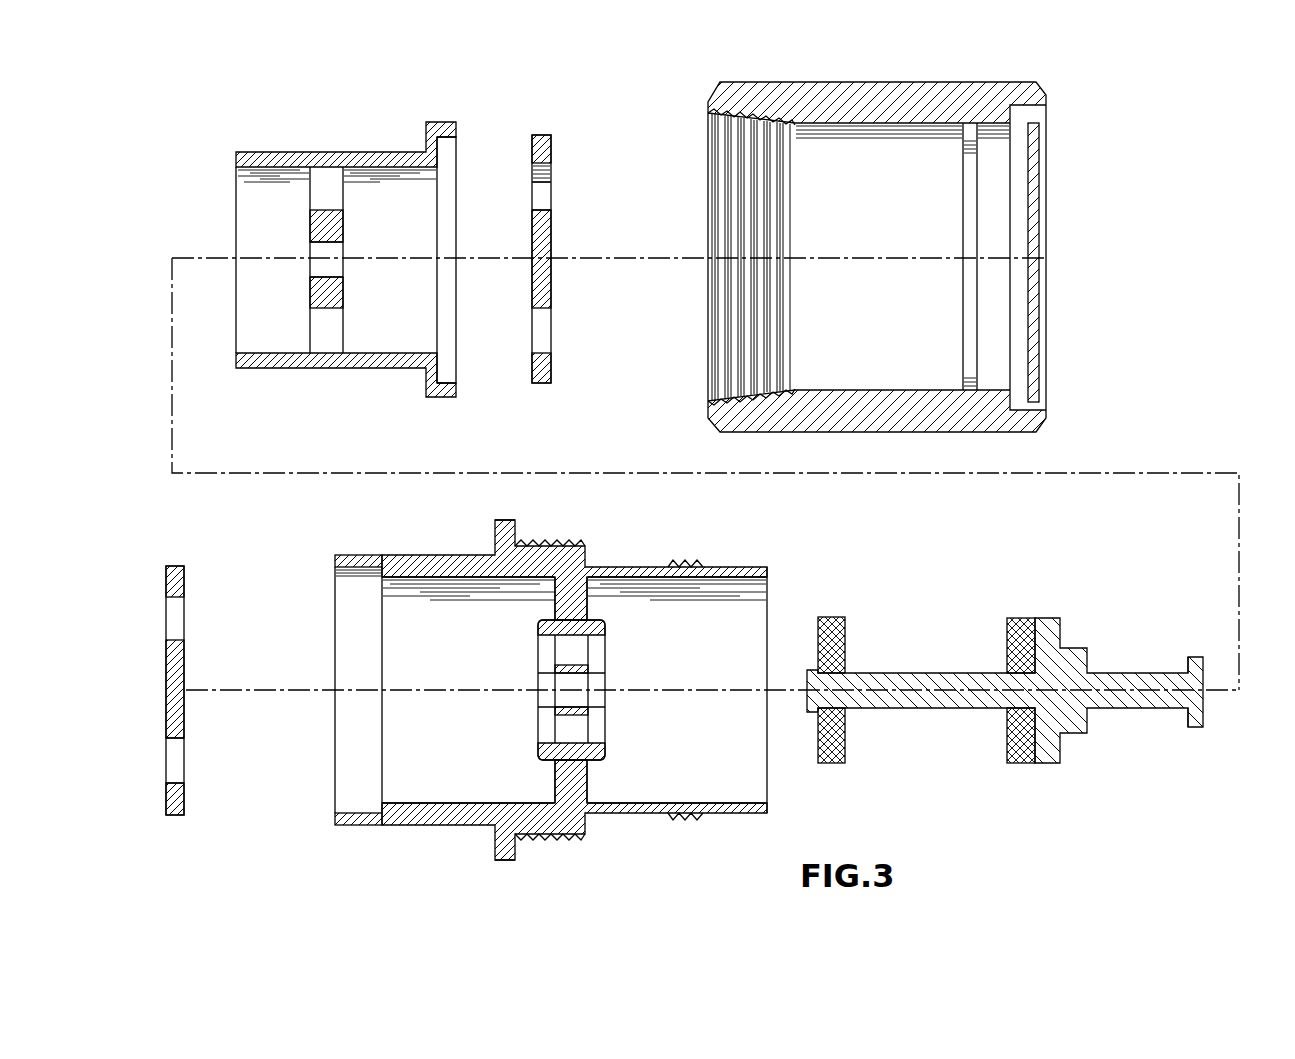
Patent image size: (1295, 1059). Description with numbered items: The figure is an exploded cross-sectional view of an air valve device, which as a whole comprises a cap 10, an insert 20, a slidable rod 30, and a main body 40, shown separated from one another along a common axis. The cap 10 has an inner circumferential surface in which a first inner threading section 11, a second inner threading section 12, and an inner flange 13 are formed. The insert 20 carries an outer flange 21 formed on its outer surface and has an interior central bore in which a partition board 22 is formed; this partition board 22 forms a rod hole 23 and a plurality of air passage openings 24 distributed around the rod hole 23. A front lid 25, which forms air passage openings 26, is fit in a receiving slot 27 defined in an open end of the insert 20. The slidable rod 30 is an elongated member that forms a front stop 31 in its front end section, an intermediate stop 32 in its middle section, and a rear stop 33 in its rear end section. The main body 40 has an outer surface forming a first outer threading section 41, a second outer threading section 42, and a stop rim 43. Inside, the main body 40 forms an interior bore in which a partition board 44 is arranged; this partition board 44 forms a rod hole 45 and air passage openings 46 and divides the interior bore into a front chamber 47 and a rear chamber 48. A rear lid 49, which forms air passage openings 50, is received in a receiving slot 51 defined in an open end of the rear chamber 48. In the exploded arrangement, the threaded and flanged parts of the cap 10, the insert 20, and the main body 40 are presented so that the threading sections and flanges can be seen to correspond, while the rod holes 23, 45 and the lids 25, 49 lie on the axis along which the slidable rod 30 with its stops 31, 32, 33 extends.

The cap 10 is at (933, 95).
The first inner threading section 11 is at (725, 170).
The second inner threading section 12 is at (773, 297).
The inner flange 13 is at (977, 190).
The insert 20 is at (387, 153).
The outer flange 21 is at (437, 122).
The partition board 22 is at (320, 192).
The rod hole 23 is at (323, 252).
The air passage openings 24 is at (340, 295).
The front lid 25 is at (538, 133).
The air passage openings 26 is at (542, 193).
The receiving slot 27 is at (450, 328).
The slidable rod 30 is at (938, 693).
The front stop 31 is at (1195, 713).
The intermediate stop 32 is at (1020, 628).
The rear stop 33 is at (833, 623).
The main body 40 is at (442, 825).
The first outer threading section 41 is at (540, 543).
The second outer threading section 42 is at (690, 558).
The stop rim 43 is at (735, 567).
The partition board 44 is at (557, 603).
The rod hole 45 is at (550, 683).
The air passage openings 46 is at (567, 650).
The front chamber 47 is at (650, 608).
The rear chamber 48 is at (392, 736).
The rear lid 49 is at (167, 570).
The air passage openings 50 is at (175, 753).
The receiving slot 51 is at (355, 793).